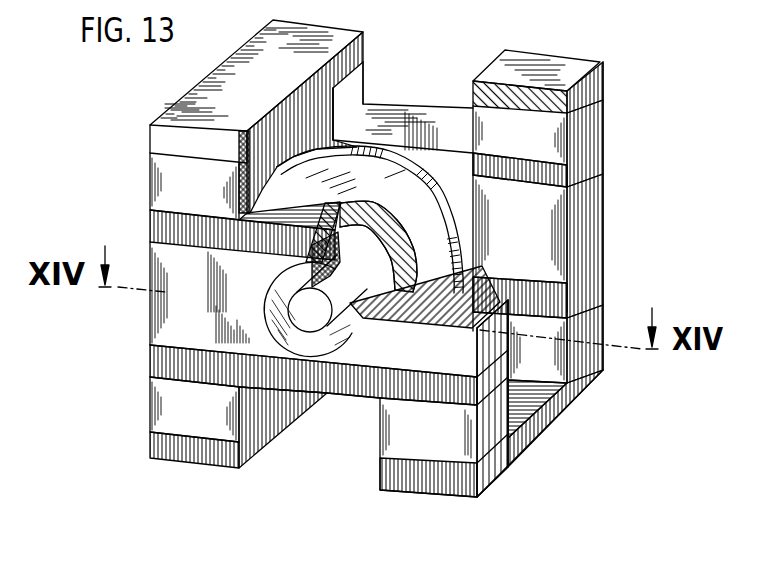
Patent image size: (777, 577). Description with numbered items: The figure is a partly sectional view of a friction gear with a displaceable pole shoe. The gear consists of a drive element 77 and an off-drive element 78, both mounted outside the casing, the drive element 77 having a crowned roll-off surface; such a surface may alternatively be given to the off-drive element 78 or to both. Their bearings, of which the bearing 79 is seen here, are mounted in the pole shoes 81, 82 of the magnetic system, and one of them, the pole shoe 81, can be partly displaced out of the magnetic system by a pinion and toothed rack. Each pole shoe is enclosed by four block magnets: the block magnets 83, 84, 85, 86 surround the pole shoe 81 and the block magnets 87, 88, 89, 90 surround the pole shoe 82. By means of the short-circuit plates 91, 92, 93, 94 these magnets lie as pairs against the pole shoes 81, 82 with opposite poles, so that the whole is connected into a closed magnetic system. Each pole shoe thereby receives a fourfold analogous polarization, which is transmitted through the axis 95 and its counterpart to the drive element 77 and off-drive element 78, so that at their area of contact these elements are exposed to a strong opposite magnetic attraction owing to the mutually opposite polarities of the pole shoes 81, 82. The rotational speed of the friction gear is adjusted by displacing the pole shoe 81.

The drive element 77 is at (443, 252).
The off-drive element 78 is at (462, 203).
The bearing 79 is at (353, 328).
The pole shoe 81 is at (163, 313).
The pole shoe 82 is at (593, 217).
The block magnet 83 is at (164, 180).
The block magnet 84 is at (162, 403).
The block magnet 85 is at (360, 80).
The block magnet 86 is at (406, 101).
The block magnet 87 is at (594, 118).
The block magnet 88 is at (596, 338).
The block magnet 89 is at (380, 438).
The block magnet 90 is at (396, 467).
The short-circuit plate 91 is at (183, 113).
The short-circuit plate 92 is at (163, 452).
The short-circuit plate 93 is at (512, 452).
The short-circuit plate 94 is at (595, 78).
The axis 95 is at (300, 316).